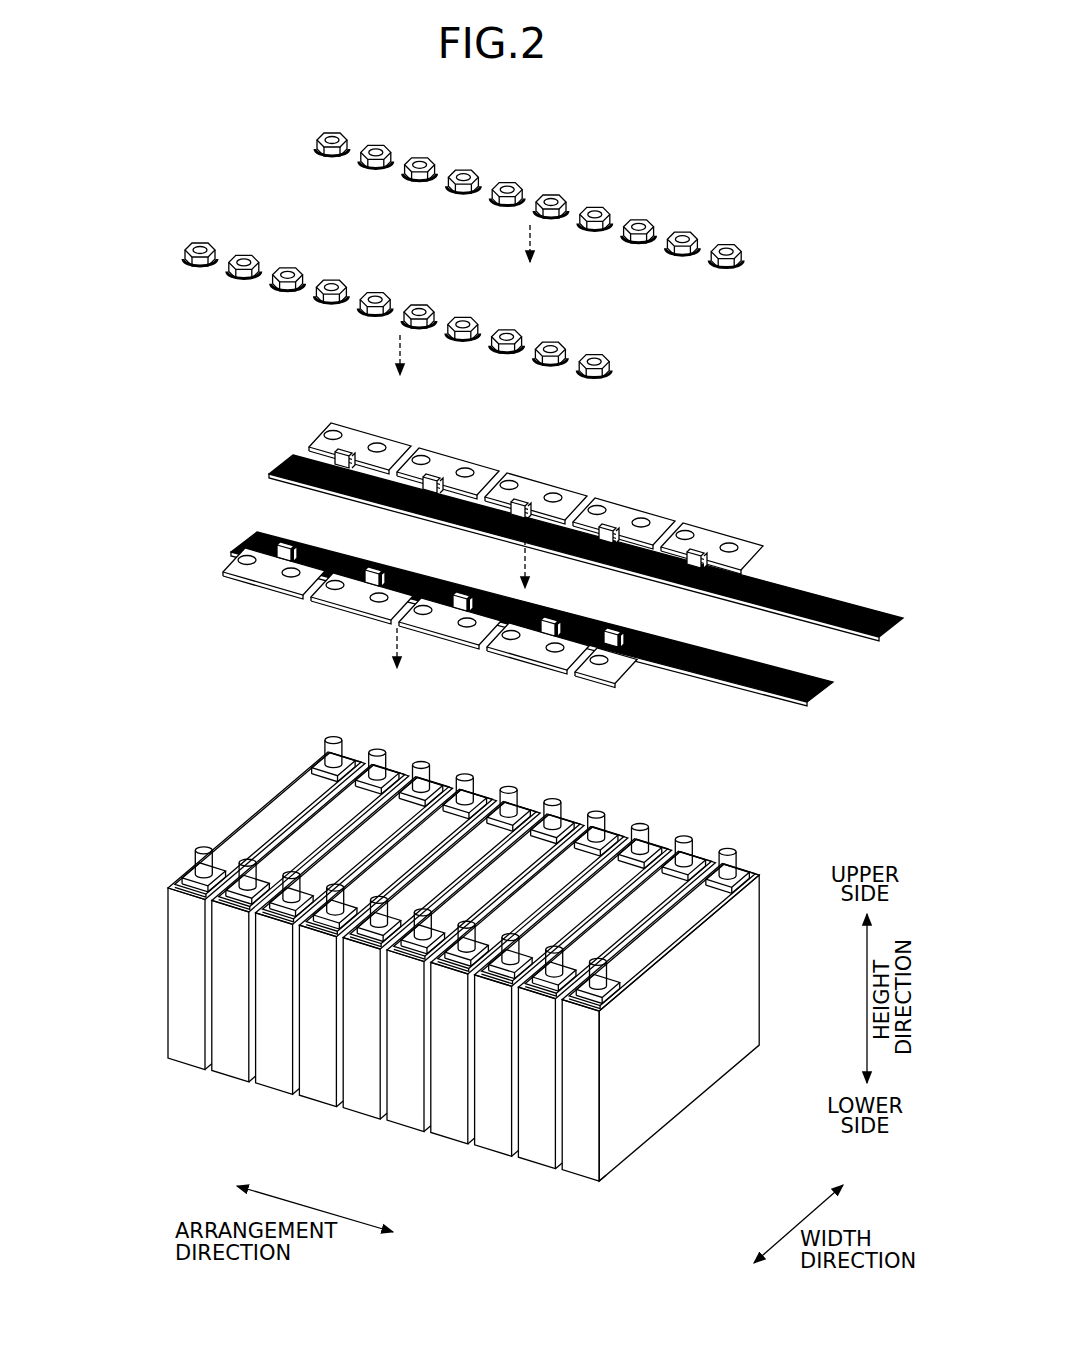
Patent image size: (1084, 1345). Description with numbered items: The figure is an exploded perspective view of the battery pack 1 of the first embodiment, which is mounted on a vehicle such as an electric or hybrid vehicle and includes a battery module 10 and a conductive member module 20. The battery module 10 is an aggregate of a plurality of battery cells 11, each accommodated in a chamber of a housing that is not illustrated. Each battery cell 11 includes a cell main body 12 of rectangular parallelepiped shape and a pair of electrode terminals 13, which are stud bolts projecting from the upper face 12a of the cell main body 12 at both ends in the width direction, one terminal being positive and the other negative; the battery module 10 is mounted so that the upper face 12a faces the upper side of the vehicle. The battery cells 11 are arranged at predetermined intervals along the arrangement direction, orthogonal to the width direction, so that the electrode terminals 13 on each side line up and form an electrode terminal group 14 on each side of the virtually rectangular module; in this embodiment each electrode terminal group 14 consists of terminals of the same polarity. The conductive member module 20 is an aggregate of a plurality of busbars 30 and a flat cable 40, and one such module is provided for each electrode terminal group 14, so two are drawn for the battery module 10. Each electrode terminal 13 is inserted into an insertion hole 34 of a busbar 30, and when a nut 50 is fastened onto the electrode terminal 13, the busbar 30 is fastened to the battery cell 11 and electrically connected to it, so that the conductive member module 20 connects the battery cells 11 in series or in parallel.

The battery pack 1 is at (108, 69).
The battery module 10 is at (792, 830).
The battery cell 11 is at (486, 952).
The cell main body 12 is at (499, 978).
The upper face 12a is at (680, 919).
The electrode terminal 13 is at (375, 750).
The electrode terminal group 14 is at (298, 736).
The conductive member module 20 is at (310, 398).
The busbar 30 is at (725, 540).
The insertion hole 34 is at (752, 548).
The flat cable 40 is at (736, 688).
The nut 50 is at (378, 144).